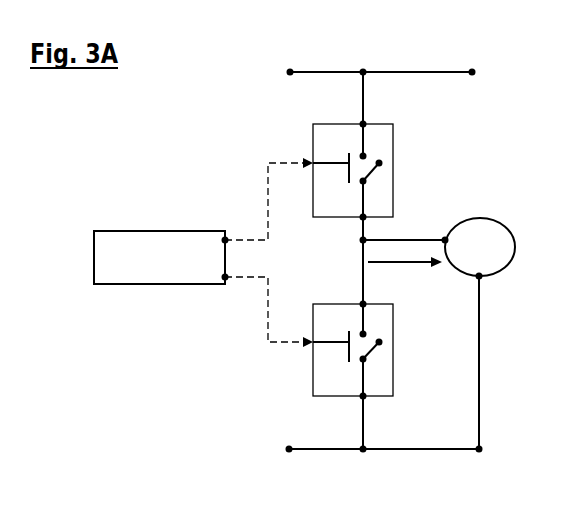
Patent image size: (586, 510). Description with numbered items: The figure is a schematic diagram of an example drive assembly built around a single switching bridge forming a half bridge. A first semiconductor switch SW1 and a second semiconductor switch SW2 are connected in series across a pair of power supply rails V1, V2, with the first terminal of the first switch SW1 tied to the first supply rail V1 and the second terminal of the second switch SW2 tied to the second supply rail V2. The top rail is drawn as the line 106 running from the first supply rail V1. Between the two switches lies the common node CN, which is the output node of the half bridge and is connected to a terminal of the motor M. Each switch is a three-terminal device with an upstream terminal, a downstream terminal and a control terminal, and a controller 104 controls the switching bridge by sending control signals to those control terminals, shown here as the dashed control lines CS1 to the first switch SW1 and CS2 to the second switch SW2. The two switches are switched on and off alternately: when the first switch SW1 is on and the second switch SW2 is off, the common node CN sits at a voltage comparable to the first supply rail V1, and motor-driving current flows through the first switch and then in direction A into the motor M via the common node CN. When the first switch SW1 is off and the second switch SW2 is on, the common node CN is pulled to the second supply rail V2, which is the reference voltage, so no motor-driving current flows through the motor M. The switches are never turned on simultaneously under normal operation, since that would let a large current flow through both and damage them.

The controller 104 is at (161, 243).
The power supply line (V1 node) 106 is at (381, 59).
The first semiconductor switch SW1 is at (348, 162).
The second semiconductor switch SW2 is at (346, 340).
The first control signal CS1 is at (269, 187).
The second control signal CS2 is at (269, 329).
The common node CN is at (352, 241).
The motor M is at (480, 333).
The direction of motor-driving current A is at (405, 277).
The first supply rail V1 is at (272, 67).
The second supply rail V2 is at (361, 450).